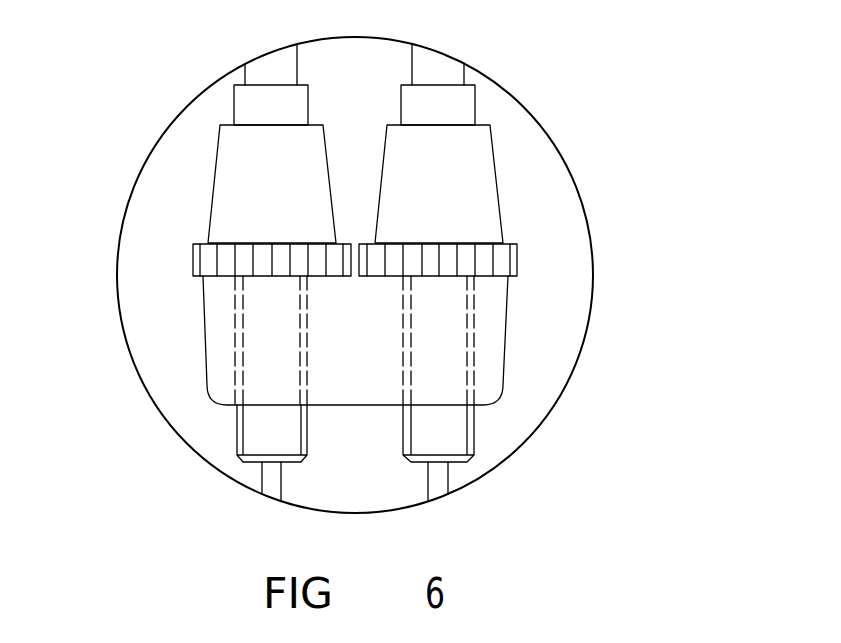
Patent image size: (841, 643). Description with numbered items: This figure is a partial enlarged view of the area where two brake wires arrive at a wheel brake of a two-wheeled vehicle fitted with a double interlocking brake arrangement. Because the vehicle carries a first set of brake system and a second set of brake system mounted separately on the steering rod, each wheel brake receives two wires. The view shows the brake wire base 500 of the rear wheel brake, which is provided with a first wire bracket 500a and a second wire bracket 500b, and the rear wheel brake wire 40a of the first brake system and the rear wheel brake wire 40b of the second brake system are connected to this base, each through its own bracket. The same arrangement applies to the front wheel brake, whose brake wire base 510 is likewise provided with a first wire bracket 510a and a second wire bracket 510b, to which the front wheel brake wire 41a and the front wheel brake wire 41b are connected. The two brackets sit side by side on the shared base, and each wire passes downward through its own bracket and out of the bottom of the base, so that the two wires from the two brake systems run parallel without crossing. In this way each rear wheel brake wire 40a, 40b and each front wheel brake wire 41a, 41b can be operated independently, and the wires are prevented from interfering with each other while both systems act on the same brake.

The second wire bracket 500b is at (209, 160).
The second wire bracket 510b is at (235, 179).
The first wire bracket 500a is at (508, 160).
The first wire bracket 510a is at (470, 180).
The brake wire base 500 is at (438, 341).
The brake wire base 510 is at (490, 329).
The rear wheel brake wire 40b is at (198, 482).
The front wheel brake wire 41b is at (270, 480).
The rear wheel brake wire 40a is at (526, 476).
The front wheel brake wire 41a is at (440, 478).